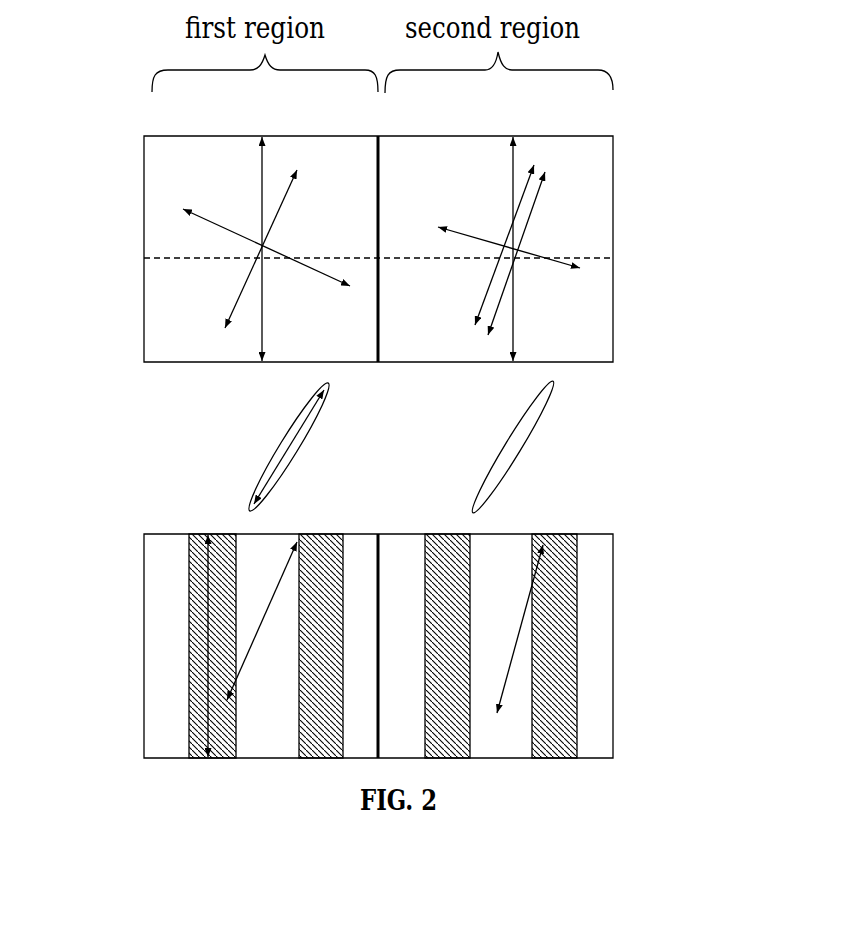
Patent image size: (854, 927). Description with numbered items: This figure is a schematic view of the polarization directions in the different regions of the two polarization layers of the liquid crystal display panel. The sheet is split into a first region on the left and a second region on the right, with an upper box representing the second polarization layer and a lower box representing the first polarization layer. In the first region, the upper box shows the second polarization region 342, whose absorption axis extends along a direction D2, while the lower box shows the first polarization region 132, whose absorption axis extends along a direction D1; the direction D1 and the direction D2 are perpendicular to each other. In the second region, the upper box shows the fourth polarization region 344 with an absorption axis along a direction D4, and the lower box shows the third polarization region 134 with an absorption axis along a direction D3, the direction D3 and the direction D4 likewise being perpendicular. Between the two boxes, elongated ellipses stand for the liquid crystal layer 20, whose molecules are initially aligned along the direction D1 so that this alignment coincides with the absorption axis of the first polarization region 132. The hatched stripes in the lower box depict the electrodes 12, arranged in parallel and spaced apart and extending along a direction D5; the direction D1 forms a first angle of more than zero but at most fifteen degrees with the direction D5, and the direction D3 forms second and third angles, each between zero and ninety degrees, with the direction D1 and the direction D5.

The electrodes 12 is at (580, 722).
The liquid crystal layer 20 is at (532, 437).
The first polarization region 132 is at (138, 643).
The third polarization region 134 is at (617, 643).
The second polarization region 342 is at (138, 308).
The fourth polarization region 344 is at (615, 344).
The direction D1 is at (272, 207).
The direction D2 is at (202, 225).
The direction D3 is at (547, 198).
The direction D4 is at (438, 225).
The direction D5 is at (255, 342).